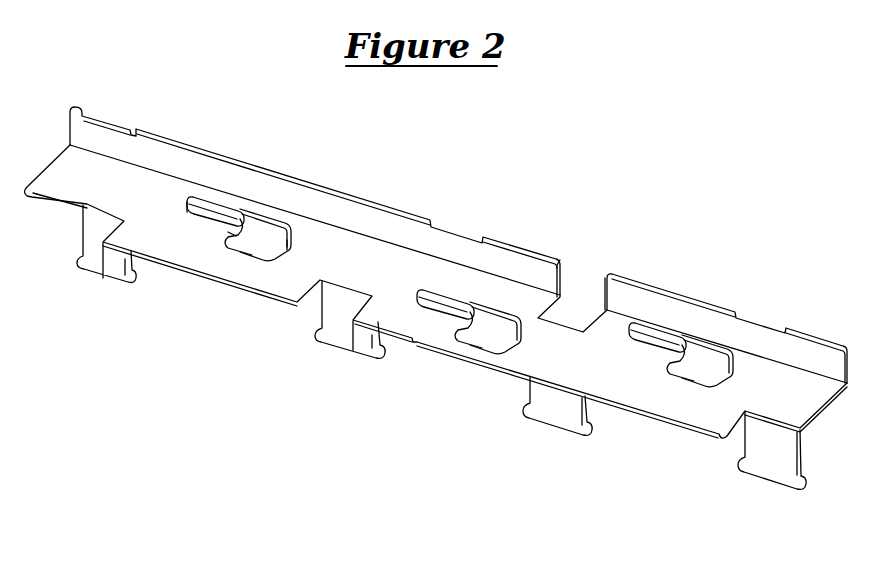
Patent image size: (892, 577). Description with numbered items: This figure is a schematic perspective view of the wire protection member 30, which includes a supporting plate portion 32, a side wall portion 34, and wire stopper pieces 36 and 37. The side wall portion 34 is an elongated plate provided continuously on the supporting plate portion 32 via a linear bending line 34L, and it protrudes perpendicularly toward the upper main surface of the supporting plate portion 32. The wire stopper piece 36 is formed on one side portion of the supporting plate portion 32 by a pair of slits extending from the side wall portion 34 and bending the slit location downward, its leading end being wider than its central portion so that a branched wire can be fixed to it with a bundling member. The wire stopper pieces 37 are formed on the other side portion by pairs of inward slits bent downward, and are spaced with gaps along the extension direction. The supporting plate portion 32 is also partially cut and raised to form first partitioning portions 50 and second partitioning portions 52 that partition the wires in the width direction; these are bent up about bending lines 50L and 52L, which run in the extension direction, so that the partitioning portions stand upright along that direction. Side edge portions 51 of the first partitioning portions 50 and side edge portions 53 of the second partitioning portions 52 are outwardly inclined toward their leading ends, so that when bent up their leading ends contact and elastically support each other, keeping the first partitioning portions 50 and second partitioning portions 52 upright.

The wire protection member 30 is at (512, 226).
The supporting plate portion 32 is at (217, 267).
The side wall portion 34 is at (403, 206).
The bending line 34L is at (352, 232).
The wire stopper piece 36 is at (564, 431).
The wire stopper pieces 37 is at (104, 279).
The first partitioning portions 50 is at (207, 197).
The bending lines 50L is at (193, 222).
The side edge portions 51 is at (233, 227).
The second partitioning portions 52 is at (267, 213).
The bending lines 52L is at (262, 243).
The side edge portions 53 is at (237, 223).